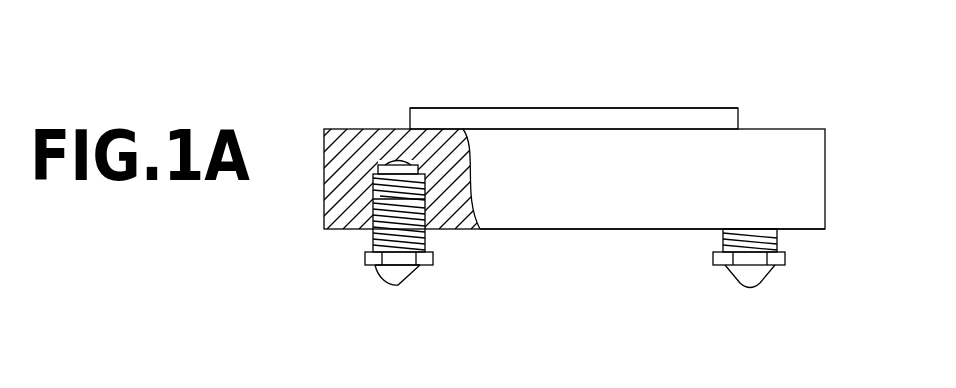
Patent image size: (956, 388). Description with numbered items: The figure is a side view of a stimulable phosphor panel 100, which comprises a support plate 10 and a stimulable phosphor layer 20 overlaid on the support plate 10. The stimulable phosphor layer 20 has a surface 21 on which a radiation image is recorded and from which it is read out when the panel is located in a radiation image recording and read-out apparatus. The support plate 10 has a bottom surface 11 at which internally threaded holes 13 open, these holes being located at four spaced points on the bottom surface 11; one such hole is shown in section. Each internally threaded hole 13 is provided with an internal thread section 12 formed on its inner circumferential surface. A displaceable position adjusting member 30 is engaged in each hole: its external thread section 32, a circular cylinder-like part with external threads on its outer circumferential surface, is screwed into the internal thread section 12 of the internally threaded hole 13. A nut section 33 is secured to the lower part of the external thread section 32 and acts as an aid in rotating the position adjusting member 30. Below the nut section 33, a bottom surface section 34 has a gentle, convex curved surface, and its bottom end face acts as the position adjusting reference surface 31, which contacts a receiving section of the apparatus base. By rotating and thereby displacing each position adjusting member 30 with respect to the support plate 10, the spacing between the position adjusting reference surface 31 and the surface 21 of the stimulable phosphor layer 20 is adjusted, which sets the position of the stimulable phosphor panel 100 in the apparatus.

The stimulable phosphor panel 100 is at (612, 67).
The support plate 10 is at (830, 171).
The bottom surface 11 is at (605, 231).
The internal thread section 12 is at (375, 193).
The internally threaded hole 13 is at (400, 153).
The stimulable phosphor layer 20 is at (729, 120).
The surface 21 is at (683, 108).
The position adjusting member 30 is at (260, 275).
The position adjusting reference surface 31 is at (396, 272).
The external thread section 32 is at (366, 257).
The nut section 33 is at (372, 266).
The bottom surface section 34 is at (392, 275).